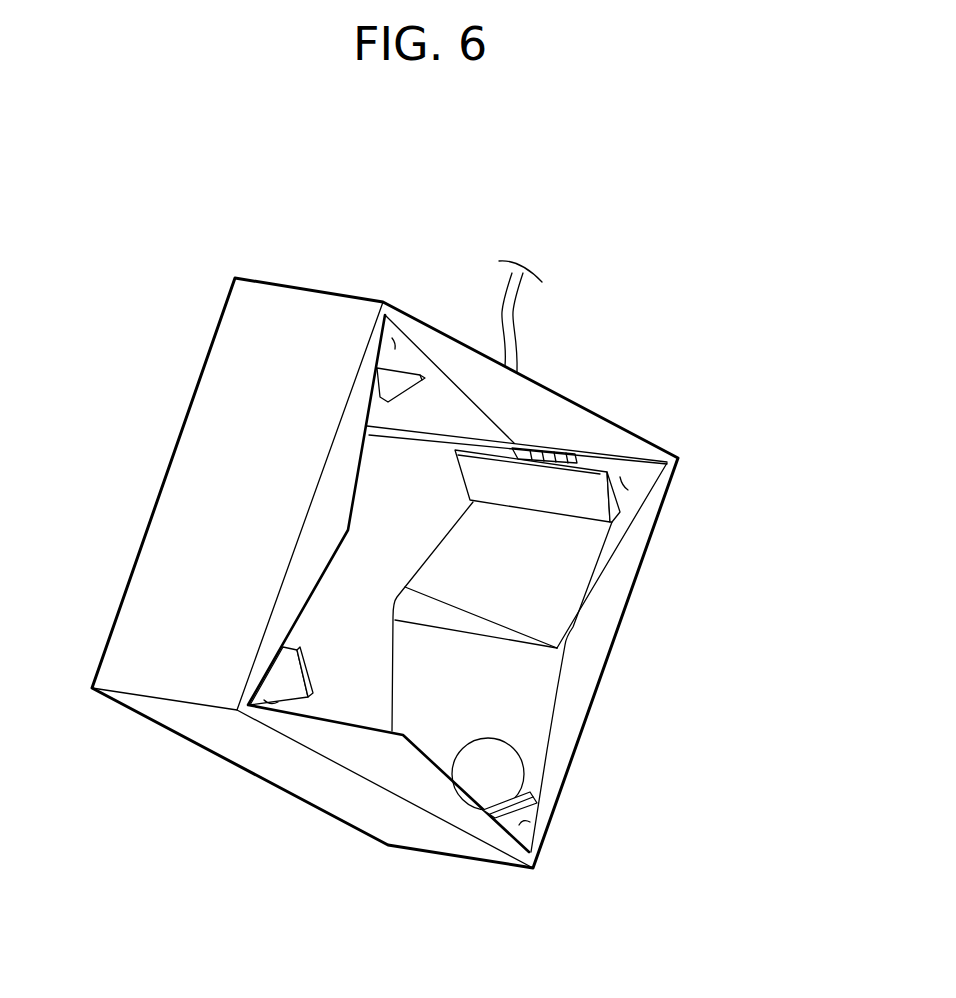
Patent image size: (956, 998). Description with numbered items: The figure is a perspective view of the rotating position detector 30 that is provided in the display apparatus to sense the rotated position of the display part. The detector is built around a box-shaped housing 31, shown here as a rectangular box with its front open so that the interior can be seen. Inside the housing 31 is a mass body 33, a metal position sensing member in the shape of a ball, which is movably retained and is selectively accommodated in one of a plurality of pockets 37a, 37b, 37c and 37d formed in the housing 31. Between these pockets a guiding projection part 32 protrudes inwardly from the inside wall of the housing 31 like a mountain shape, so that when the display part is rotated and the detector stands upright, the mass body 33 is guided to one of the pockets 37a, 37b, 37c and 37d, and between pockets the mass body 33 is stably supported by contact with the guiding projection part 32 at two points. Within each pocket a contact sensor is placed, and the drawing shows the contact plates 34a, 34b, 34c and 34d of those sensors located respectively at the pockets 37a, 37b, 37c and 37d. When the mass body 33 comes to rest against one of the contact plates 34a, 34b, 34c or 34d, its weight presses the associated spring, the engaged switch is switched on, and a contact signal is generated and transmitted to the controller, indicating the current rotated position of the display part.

The rotating position detector 30 is at (643, 348).
The housing 31 is at (287, 780).
The guiding projection part 32 is at (382, 772).
The mass body 33 is at (470, 777).
The contact plate 34a is at (385, 388).
The contact plate 34b is at (620, 503).
The contact plate 34c is at (515, 813).
The contact plate 34d is at (285, 670).
The pocket 37a is at (392, 338).
The pocket 37b is at (620, 477).
The pocket 37c is at (525, 820).
The pocket 37d is at (270, 704).